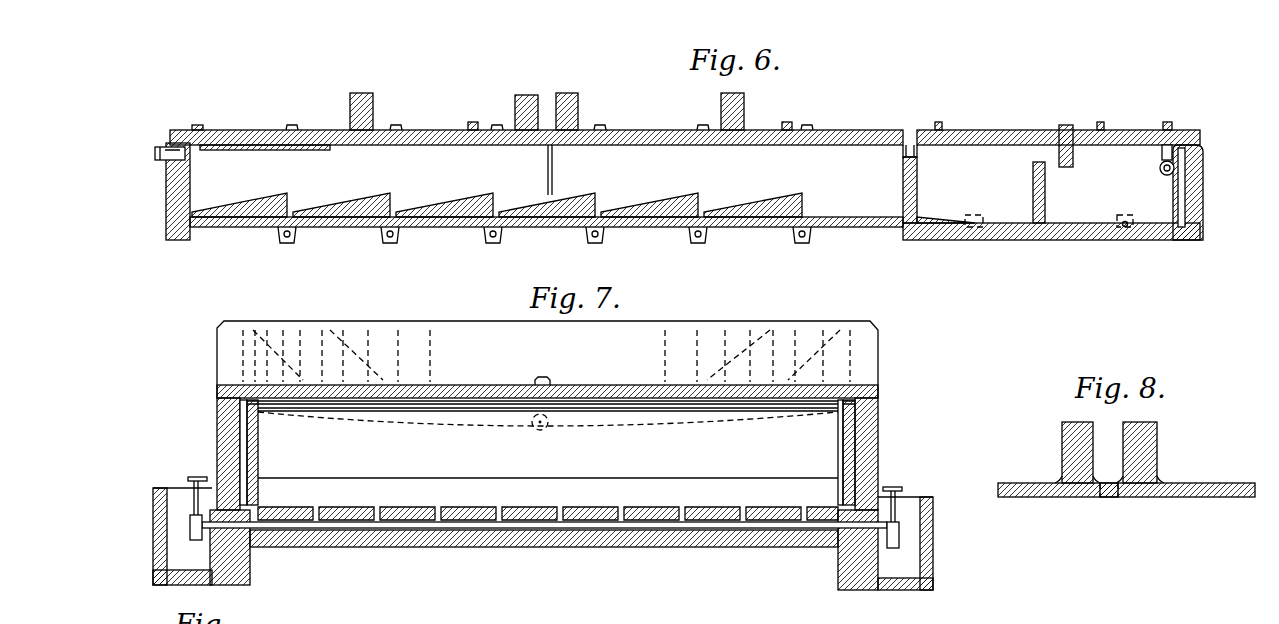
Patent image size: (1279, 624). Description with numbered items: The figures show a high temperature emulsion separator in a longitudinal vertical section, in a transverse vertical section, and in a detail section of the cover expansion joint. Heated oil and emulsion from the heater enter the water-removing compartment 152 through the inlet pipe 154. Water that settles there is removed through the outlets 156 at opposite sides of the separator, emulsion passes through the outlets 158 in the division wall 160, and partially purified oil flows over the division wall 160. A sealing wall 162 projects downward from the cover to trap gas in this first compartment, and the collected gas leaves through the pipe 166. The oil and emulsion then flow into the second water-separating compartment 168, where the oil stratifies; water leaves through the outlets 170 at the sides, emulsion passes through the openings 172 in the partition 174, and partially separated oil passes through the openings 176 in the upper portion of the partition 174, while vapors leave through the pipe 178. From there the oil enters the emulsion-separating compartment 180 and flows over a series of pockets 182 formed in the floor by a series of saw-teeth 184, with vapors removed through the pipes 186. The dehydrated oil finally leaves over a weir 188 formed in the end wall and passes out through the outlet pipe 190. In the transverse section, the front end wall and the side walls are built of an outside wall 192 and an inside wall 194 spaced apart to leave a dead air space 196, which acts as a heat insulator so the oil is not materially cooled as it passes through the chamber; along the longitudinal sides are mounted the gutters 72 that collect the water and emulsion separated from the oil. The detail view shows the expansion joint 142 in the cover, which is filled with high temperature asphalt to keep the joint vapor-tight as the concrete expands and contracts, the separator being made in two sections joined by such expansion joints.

In FIG. 7, the gutter 72 is at (907, 545).
In FIG. 8, the expansion joint 142 is at (1110, 497).
In FIG. 6, the water-removing compartment 152 is at (1150, 197).
In FIG. 6, the inlet pipe 154 is at (1176, 150).
In FIG. 6, the outlets 156 is at (1126, 234).
In FIG. 6, the outlets 158 is at (1045, 198).
In FIG. 6, the division wall 160 is at (1020, 135).
In FIG. 6, the sealing wall 162 is at (1072, 162).
In FIG. 6, the pipe 166 is at (1101, 130).
In FIG. 6, the second water-separating compartment 168 is at (960, 160).
In FIG. 6, the outlets 170 is at (975, 230).
In FIG. 6, the openings 172 is at (903, 190).
In FIG. 6, the partition 174 is at (905, 176).
In FIG. 6, the openings 176 is at (911, 145).
In FIG. 6, the pipe 178 is at (940, 122).
In FIG. 6, the emulsion-separating compartment 180 is at (594, 160).
In FIG. 6, the pockets 182 is at (705, 212).
In FIG. 6, the saw-teeth 184 is at (676, 212).
In FIG. 6, the pipes 186 is at (474, 122).
In FIG. 6, the weir 188 is at (207, 137).
In FIG. 6, the outlet pipe 190 is at (159, 147).
In FIG. 7, the outside wall 192 is at (218, 440).
In FIG. 7, the inside wall 194 is at (246, 428).
In FIG. 7, the dead air space 196 is at (245, 463).